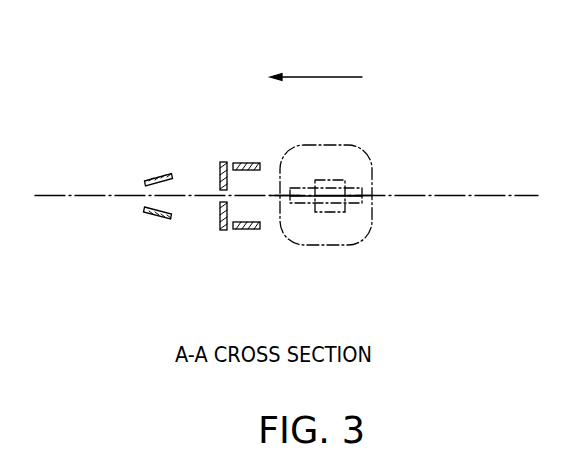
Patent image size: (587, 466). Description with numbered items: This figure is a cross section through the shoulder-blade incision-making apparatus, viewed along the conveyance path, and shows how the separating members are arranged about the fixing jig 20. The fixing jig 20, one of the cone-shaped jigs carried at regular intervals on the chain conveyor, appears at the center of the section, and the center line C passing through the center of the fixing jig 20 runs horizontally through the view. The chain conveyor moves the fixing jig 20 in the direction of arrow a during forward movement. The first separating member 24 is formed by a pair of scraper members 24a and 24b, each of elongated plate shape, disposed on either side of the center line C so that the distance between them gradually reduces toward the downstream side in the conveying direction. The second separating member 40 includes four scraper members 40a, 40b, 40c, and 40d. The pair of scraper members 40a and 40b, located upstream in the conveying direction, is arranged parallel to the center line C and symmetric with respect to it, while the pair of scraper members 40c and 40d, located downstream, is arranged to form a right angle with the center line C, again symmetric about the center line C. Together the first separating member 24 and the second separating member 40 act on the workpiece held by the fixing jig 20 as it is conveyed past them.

The fixing jig 20 is at (330, 146).
The first separating member 24 is at (151, 151).
The scraper member 24a is at (158, 218).
The scraper member 24b is at (161, 173).
The second separating member 40 is at (228, 163).
The scraper member 40a is at (248, 231).
The scraper member 40b is at (247, 161).
The scraper member 40c is at (218, 218).
The scraper member 40d is at (218, 164).
The arrow a is at (322, 75).
The center line C is at (478, 195).